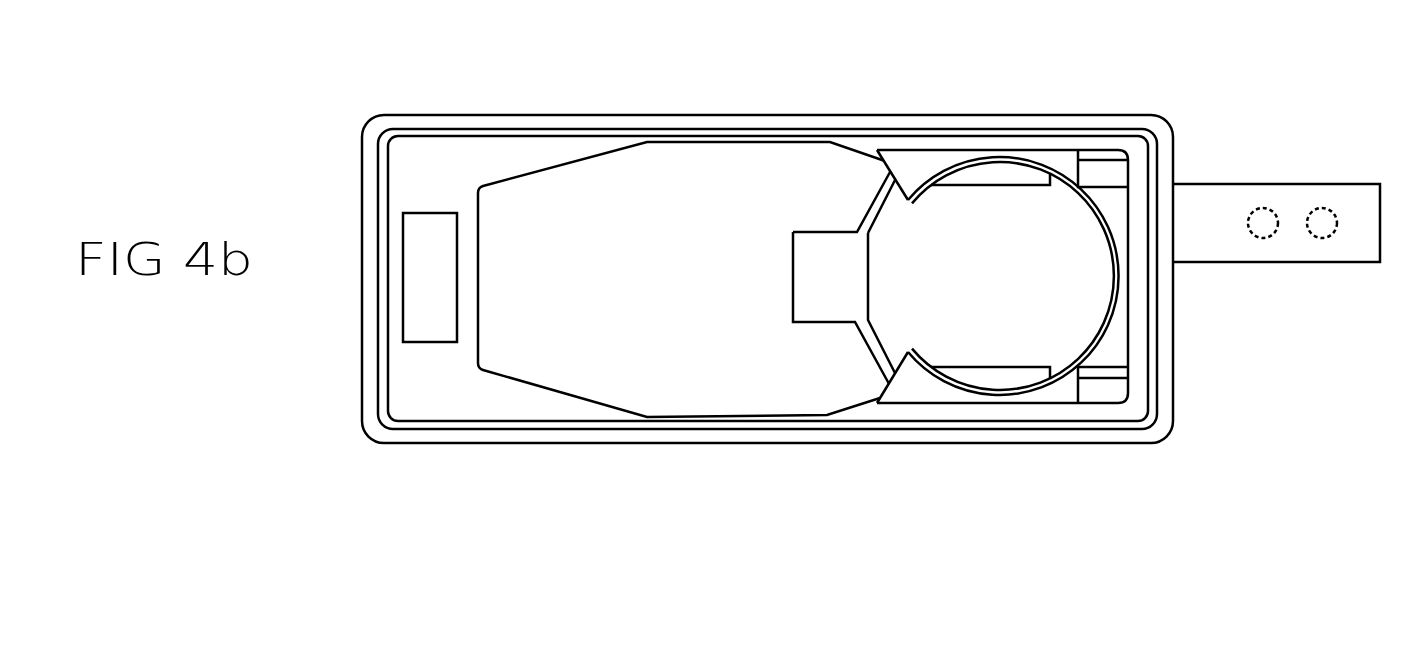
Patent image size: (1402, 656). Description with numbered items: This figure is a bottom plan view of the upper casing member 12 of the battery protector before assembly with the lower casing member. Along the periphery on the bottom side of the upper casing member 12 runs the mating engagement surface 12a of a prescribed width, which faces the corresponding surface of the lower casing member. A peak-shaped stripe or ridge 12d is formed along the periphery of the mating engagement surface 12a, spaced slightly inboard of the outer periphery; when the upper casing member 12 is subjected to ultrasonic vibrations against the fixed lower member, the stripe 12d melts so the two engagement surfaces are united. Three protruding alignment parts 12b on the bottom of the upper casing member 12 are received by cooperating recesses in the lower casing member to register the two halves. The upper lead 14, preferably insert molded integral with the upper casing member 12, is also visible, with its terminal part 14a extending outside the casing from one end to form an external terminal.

The upper casing member 12 is at (907, 114).
The mating engagement surface 12a is at (448, 160).
The protruding alignment parts 12b is at (1103, 170).
The peak-shaped stripe 12d is at (542, 134).
The upper lead 14 is at (975, 342).
The terminal part 14a is at (1293, 246).